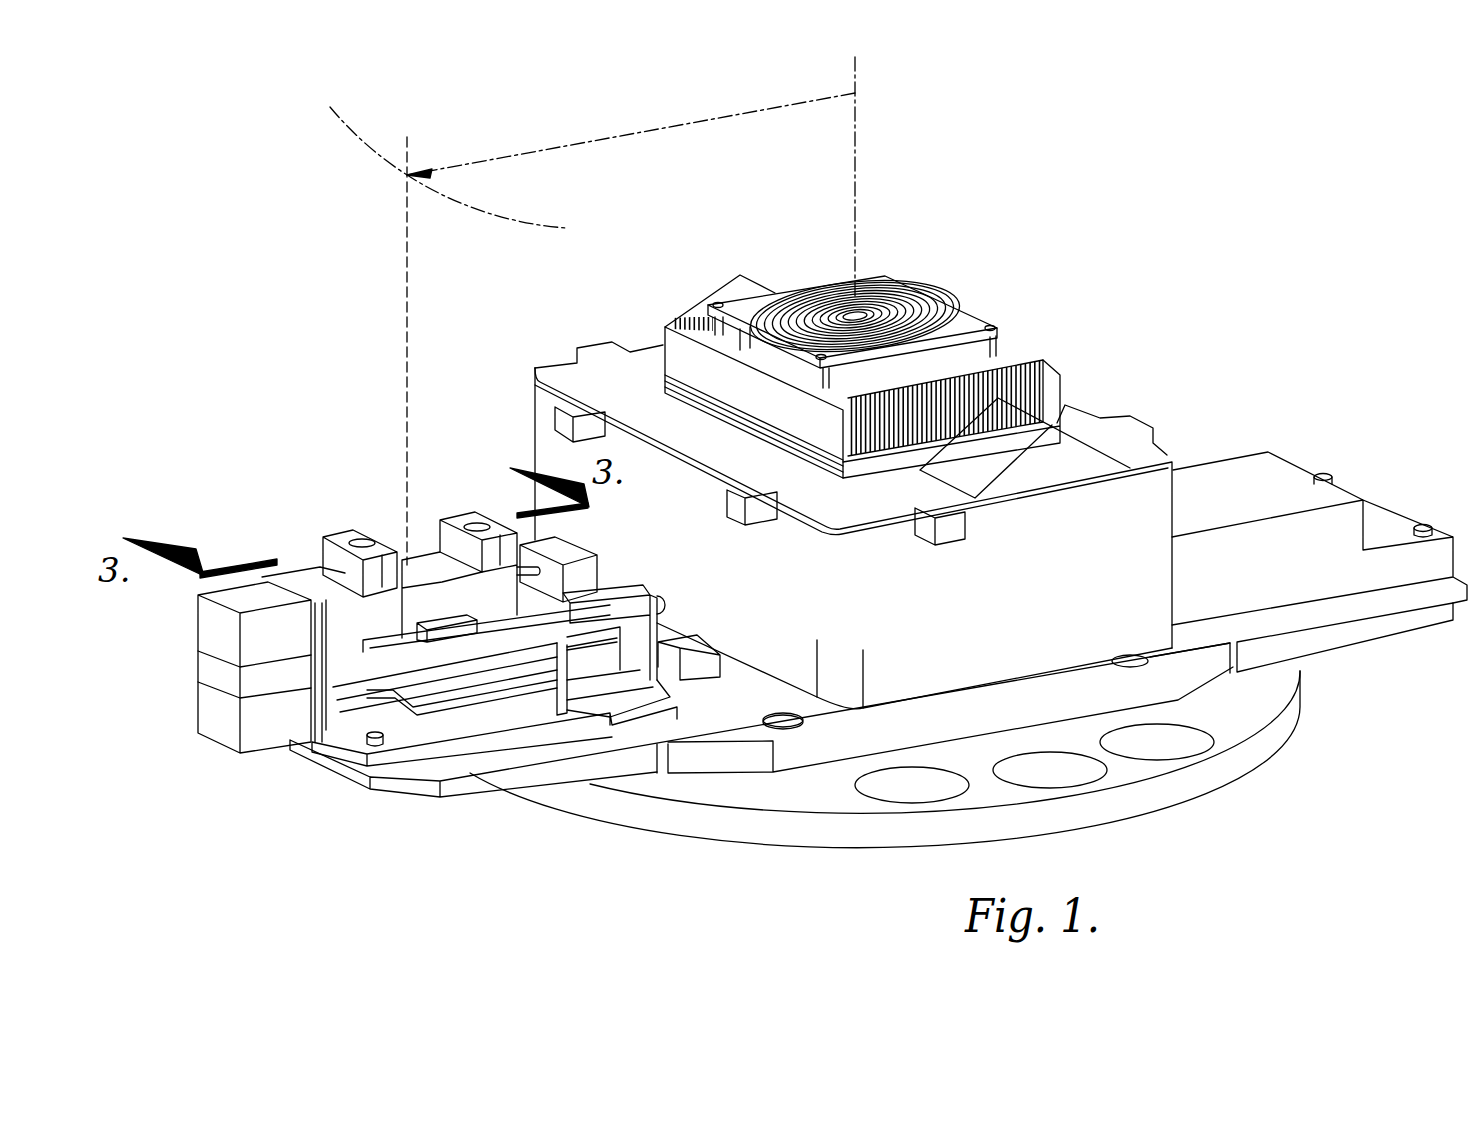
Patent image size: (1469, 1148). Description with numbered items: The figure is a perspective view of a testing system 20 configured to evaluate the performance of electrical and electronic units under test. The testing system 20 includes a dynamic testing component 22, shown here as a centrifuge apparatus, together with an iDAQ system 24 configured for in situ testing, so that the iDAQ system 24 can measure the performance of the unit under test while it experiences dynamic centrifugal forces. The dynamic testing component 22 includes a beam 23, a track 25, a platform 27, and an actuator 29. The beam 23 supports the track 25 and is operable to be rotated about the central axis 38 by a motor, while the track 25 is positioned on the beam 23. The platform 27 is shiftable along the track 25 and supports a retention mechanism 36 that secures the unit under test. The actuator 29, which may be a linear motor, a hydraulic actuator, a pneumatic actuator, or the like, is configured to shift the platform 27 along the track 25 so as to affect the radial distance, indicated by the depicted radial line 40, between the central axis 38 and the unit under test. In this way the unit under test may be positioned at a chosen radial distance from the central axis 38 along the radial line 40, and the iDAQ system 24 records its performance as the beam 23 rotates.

The testing system 20 is at (548, 338).
The dynamic testing component 22 is at (726, 792).
The beam 23 is at (466, 787).
The iDAQ system 24 is at (1112, 396).
The track 25 is at (353, 753).
The platform 27 is at (637, 617).
The actuator 29 is at (213, 670).
The retention mechanism 36 is at (333, 556).
The central axis 38 is at (856, 135).
The radial line 40 is at (510, 157).